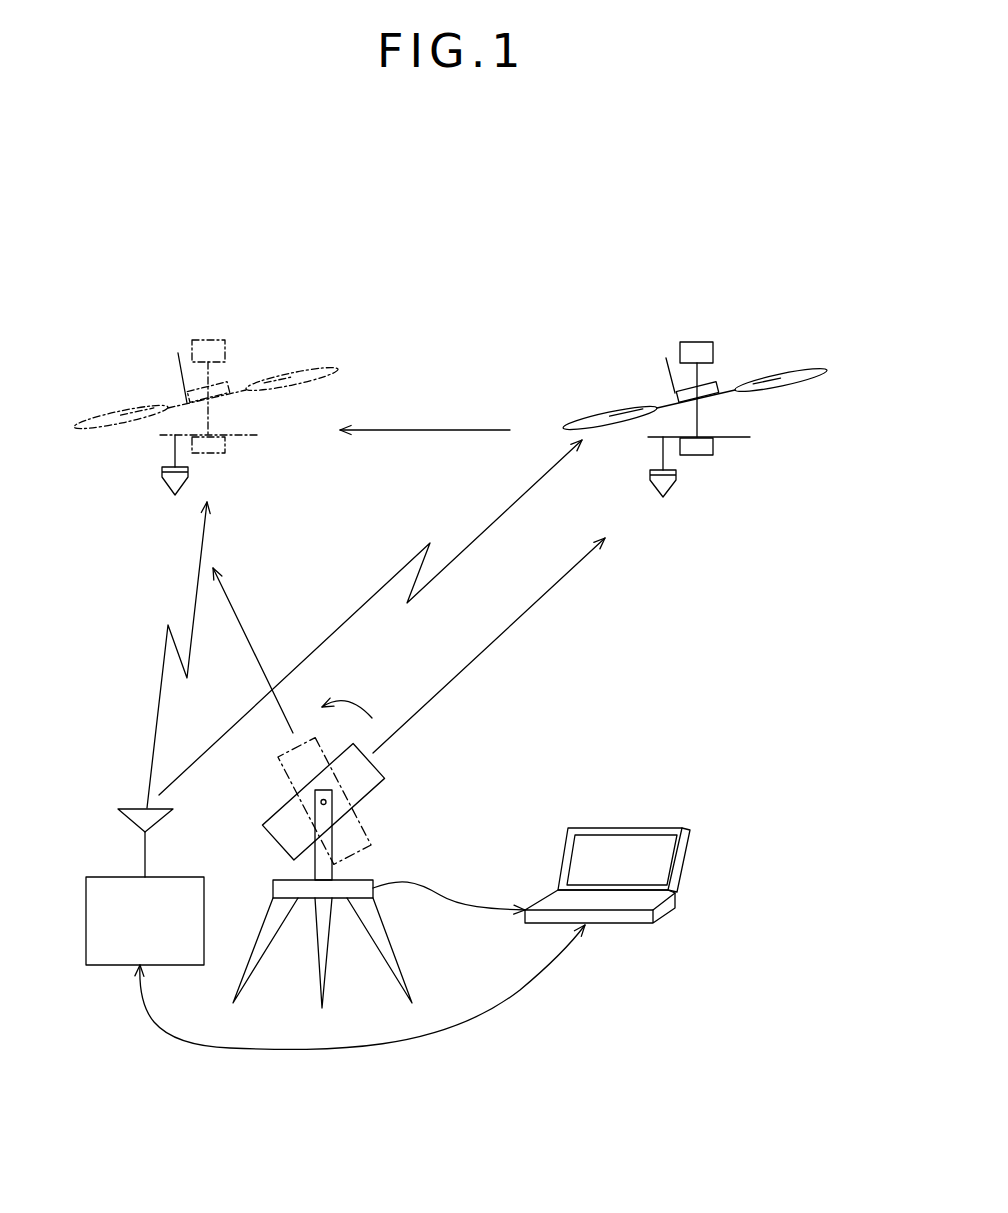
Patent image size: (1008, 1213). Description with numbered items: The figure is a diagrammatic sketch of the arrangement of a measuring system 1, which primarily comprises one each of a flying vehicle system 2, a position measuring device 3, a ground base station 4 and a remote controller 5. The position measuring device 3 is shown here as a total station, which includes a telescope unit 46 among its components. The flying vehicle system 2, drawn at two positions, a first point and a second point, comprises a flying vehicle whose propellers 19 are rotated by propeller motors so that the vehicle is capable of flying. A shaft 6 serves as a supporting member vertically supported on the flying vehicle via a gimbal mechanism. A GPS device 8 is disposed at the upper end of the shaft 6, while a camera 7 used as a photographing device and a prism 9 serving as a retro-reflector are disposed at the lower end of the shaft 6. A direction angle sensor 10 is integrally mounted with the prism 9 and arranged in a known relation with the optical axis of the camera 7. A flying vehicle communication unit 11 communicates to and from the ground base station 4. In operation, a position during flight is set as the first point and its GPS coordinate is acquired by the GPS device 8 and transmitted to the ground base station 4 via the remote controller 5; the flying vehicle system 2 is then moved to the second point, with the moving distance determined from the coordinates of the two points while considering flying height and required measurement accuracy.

The measuring system 1 is at (454, 219).
The flying vehicle system 2 is at (740, 360).
The position measuring device 3 is at (365, 837).
The ground base station 4 is at (645, 825).
The remote controller 5 is at (103, 875).
The shaft 6 is at (698, 418).
The camera 7 is at (702, 455).
The GPS device 8 is at (700, 340).
The prism 9 is at (673, 490).
The direction angle sensor 10 is at (652, 470).
The flying vehicle communication unit 11 is at (666, 358).
The propellers 19 is at (803, 368).
The telescope unit 46 is at (370, 785).